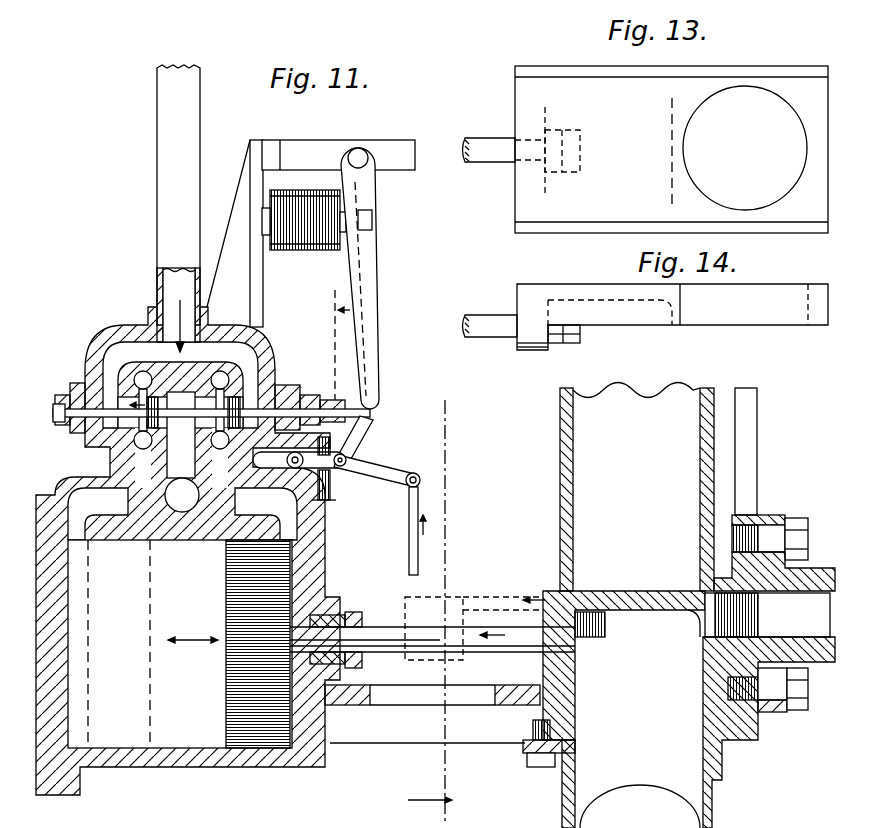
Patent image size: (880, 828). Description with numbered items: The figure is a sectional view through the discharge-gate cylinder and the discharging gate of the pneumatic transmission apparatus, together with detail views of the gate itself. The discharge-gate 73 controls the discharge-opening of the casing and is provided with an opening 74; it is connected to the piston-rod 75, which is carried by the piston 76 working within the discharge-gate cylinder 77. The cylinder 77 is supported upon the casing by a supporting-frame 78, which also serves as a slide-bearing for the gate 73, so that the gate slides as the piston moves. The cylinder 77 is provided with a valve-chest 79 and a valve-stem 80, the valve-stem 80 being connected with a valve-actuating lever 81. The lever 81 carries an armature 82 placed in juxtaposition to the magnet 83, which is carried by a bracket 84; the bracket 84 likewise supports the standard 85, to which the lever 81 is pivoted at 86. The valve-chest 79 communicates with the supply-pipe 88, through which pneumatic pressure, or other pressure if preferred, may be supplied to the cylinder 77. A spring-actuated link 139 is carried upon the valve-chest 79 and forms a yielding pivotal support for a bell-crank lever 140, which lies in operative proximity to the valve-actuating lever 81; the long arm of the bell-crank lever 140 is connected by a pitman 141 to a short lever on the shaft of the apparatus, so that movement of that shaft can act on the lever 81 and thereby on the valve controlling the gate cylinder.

In FIG. 11, the discharge-gate 73 is at (628, 592).
In FIG. 13, the discharge-gate 73 is at (646, 149).
In FIG. 11, the opening 74 is at (769, 608).
In FIG. 13, the opening 74 is at (745, 148).
In FIG. 11, the piston-rod 75 is at (510, 645).
In FIG. 11, the piston 76 is at (180, 644).
In FIG. 11, the discharge-gate cylinder 77 is at (326, 545).
In FIG. 11, the supporting-frame 78 is at (432, 714).
In FIG. 11, the valve-chest 79 is at (126, 334).
In FIG. 11, the valve-stem 80 is at (322, 408).
In FIG. 11, the valve-actuating lever 81 is at (368, 289).
In FIG. 11, the armature 82 is at (372, 222).
In FIG. 11, the magnet 83 is at (318, 243).
In FIG. 11, the bracket 84 is at (258, 150).
In FIG. 11, the standard 85 is at (310, 148).
In FIG. 11, the pivot 86 is at (362, 156).
In FIG. 11, the supply-pipe 88 is at (178, 208).
In FIG. 11, the spring-actuated link 139 is at (358, 452).
In FIG. 11, the bell-crank lever 140 is at (398, 476).
In FIG. 11, the pitman 141 is at (419, 498).